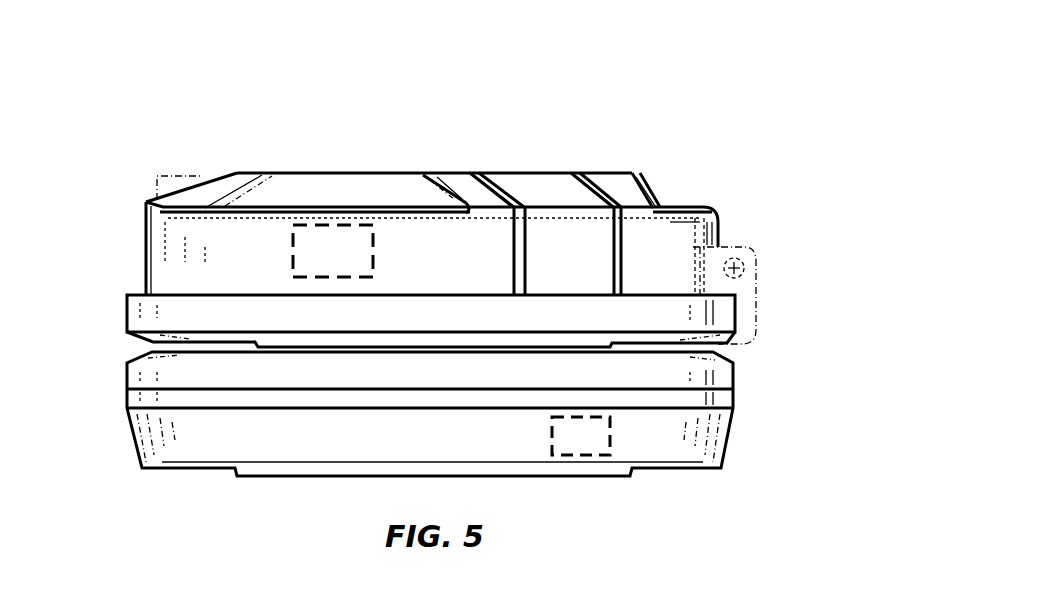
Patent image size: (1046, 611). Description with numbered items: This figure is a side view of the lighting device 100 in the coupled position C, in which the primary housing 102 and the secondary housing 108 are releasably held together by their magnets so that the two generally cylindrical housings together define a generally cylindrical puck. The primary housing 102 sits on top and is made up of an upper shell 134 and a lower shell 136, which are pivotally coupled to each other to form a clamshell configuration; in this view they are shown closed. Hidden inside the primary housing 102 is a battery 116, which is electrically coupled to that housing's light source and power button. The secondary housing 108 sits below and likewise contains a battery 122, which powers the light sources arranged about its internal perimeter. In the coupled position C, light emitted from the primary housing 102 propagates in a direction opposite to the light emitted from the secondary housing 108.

The lighting device 100 is at (451, 318).
The primary housing 102 is at (508, 217).
The battery 116 is at (333, 226).
The upper shell 134 is at (686, 228).
The lower shell 136 is at (720, 322).
The secondary housing 108 is at (482, 452).
The battery 122 is at (590, 445).
The coupled position C is at (62, 326).